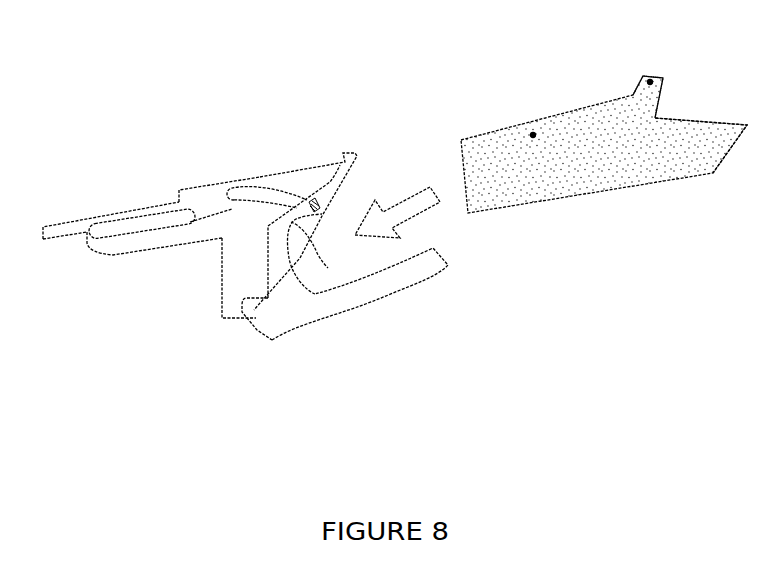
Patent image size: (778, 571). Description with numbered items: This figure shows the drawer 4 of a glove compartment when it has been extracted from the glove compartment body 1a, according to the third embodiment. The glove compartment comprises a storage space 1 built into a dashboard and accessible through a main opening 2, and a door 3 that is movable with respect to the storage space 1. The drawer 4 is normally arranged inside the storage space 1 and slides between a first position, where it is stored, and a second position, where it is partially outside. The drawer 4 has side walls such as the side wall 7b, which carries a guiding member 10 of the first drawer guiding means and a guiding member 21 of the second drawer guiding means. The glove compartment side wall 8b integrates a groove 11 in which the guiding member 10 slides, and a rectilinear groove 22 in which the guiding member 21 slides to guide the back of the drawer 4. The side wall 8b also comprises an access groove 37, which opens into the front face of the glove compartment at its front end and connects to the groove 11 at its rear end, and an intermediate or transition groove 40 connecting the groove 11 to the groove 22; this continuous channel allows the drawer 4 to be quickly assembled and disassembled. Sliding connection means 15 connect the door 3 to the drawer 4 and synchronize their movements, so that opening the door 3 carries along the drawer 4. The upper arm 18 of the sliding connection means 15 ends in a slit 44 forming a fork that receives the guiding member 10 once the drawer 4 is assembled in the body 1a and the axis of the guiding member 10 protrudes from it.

The storage space 1 is at (181, 327).
The glove compartment body 1a is at (72, 224).
The main opening 2 is at (441, 233).
The door 3 is at (418, 280).
The drawer 4 is at (618, 174).
The side wall of the drawer 7b is at (698, 166).
The side wall of the glove compartment 8b is at (135, 253).
The guiding member 10 is at (651, 79).
The groove 11 is at (248, 193).
The sliding connection means 15 is at (250, 243).
The upper arm 18 is at (323, 258).
The guiding member 21 is at (532, 132).
The rectilinear groove 22 is at (116, 224).
The access groove 37 is at (321, 185).
The transition groove 40 is at (205, 192).
The slit 44 is at (317, 172).